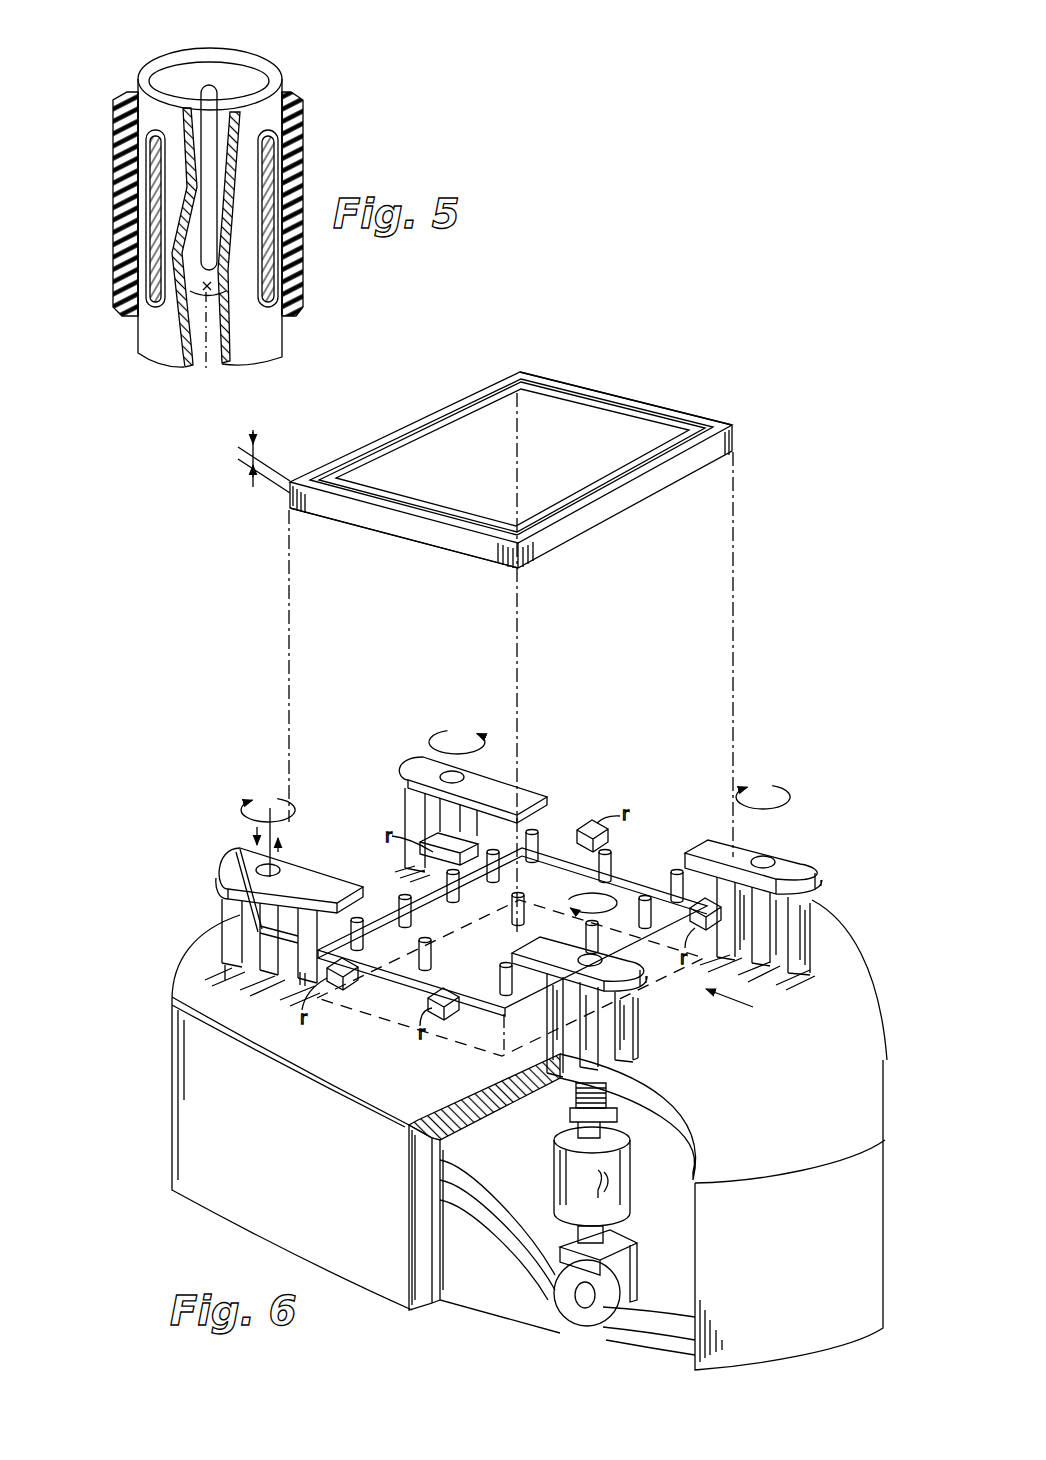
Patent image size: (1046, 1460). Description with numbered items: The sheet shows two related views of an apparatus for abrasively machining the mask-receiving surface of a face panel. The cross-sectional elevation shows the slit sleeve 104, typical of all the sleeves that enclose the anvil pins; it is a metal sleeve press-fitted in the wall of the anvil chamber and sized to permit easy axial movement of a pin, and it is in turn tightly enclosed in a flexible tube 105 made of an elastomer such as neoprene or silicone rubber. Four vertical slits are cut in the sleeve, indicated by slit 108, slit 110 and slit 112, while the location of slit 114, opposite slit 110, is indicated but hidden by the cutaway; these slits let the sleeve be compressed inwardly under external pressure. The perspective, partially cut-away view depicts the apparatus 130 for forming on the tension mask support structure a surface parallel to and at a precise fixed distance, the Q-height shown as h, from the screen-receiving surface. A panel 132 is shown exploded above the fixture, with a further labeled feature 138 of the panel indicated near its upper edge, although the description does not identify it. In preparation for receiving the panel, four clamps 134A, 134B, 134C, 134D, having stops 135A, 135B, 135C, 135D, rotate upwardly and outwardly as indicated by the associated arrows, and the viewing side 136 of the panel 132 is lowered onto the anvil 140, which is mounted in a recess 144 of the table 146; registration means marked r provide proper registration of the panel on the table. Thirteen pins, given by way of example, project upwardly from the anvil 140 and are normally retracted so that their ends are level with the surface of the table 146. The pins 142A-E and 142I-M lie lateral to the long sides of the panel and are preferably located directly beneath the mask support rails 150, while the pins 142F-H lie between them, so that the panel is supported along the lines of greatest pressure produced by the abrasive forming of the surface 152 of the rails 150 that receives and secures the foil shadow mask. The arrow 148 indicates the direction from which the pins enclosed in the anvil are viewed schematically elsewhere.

In FIG. 5, the slit sleeve 104 is at (140, 212).
In FIG. 5, the flexible tube 105 is at (122, 156).
In FIG. 5, the slit 108 is at (150, 273).
In FIG. 5, the slit 110 is at (209, 85).
In FIG. 5, the slit 112 is at (260, 307).
In FIG. 5, the slit 114 is at (203, 375).
In FIG. 6, the apparatus 130 is at (420, 1332).
In FIG. 6, the panel 132 is at (512, 471).
In FIG. 6, the clamp 134A is at (218, 867).
In FIG. 6, the clamp 134B is at (650, 988).
In FIG. 6, the clamp 134C is at (825, 878).
In FIG. 6, the clamp 134D is at (403, 763).
In FIG. 6, the stop 135A is at (372, 903).
In FIG. 6, the stop 135B is at (531, 978).
In FIG. 6, the stop 135C is at (679, 866).
In FIG. 6, the stop 135D is at (537, 822).
In FIG. 6, the viewing side 136 is at (490, 567).
In FIG. 6, the frame top edge 138 is at (717, 418).
In FIG. 6, the anvil 140 is at (445, 911).
In FIG. 6, the pins 142A-E is at (488, 992).
In FIG. 6, the pins 142F-H is at (410, 970).
In FIG. 6, the pins 142I-M is at (548, 838).
In FIG. 6, the recess 144 is at (628, 880).
In FIG. 6, the table 146 is at (838, 1000).
In FIG. 6, the arrow 148 is at (730, 1010).
In FIG. 6, the mask support rails 150 is at (345, 452).
In FIG. 6, the surface 152 is at (485, 388).